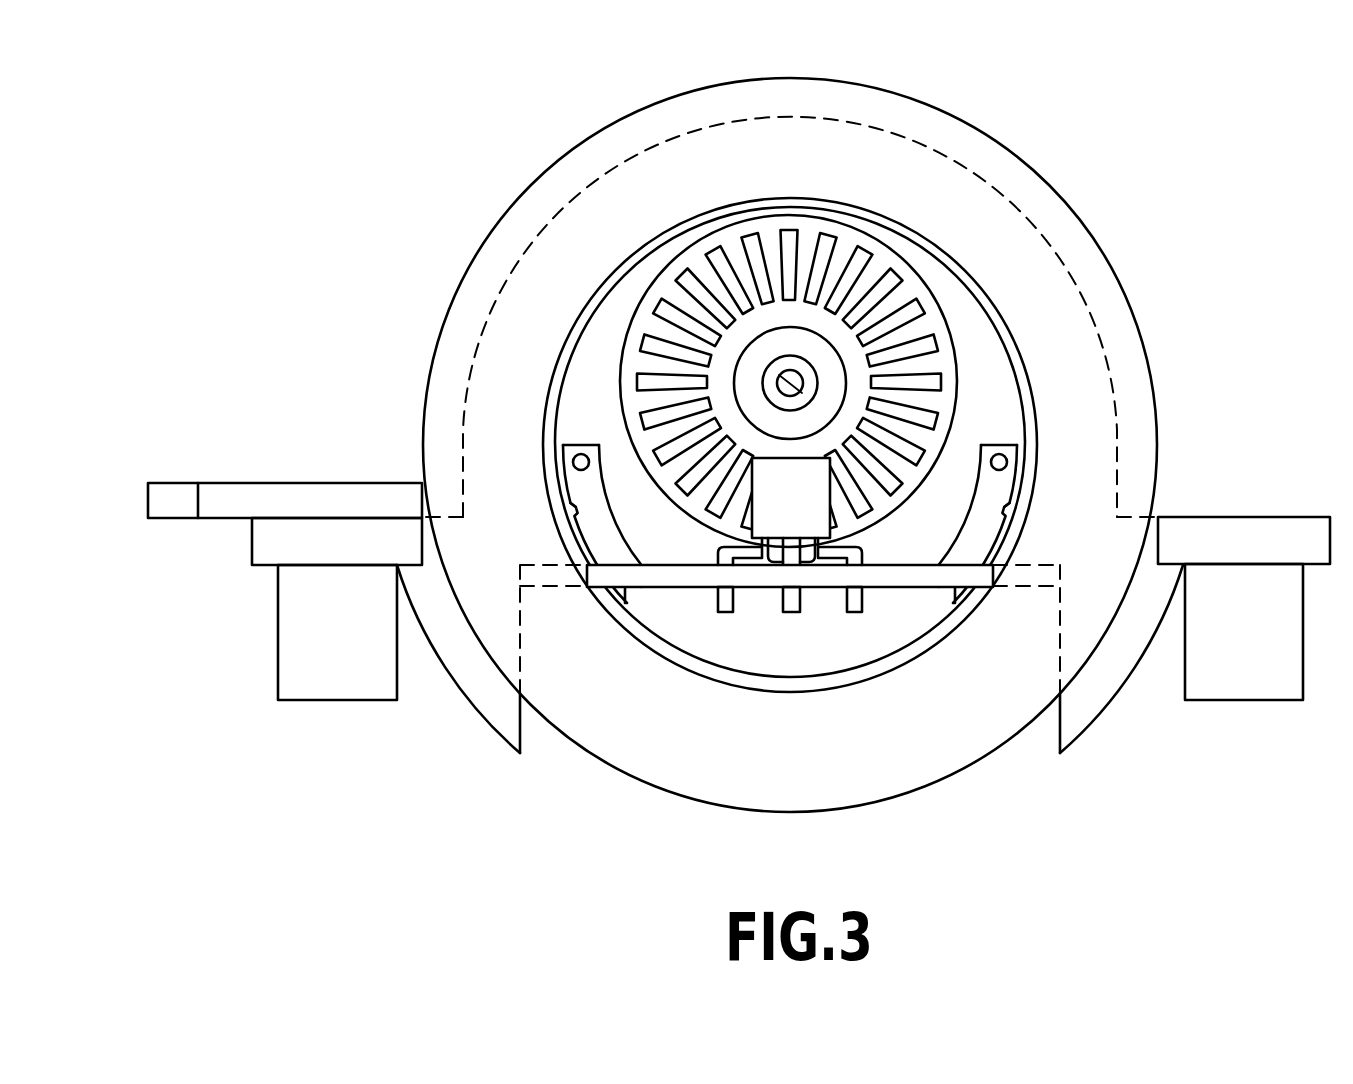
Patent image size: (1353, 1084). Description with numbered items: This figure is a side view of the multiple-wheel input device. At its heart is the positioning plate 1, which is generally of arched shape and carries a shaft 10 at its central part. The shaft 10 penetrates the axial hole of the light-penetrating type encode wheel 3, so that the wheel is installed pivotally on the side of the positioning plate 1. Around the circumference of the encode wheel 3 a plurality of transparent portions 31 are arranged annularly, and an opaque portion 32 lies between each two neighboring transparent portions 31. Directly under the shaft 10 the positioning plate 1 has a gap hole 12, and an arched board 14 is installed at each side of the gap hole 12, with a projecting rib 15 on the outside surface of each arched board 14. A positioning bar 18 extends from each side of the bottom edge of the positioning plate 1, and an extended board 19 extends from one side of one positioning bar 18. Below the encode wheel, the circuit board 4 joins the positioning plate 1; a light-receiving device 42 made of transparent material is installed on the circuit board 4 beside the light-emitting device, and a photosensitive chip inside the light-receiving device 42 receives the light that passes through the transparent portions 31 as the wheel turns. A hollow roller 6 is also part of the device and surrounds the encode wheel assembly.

The positioning plate 1 is at (985, 385).
The light-penetrating type encode wheel 3 is at (632, 312).
The circuit board 4 is at (763, 577).
The hollow roller 6 is at (597, 156).
The shaft 10 is at (787, 383).
The gap hole 12 is at (1009, 461).
The arched board 14 is at (983, 532).
The projecting rib 15 is at (1010, 507).
The positioning bar 18 is at (293, 631).
The extended board 19 is at (215, 500).
The transparent portion 31 is at (655, 350).
The opaque portion 32 is at (655, 369).
The light-receiving device 42 is at (790, 518).